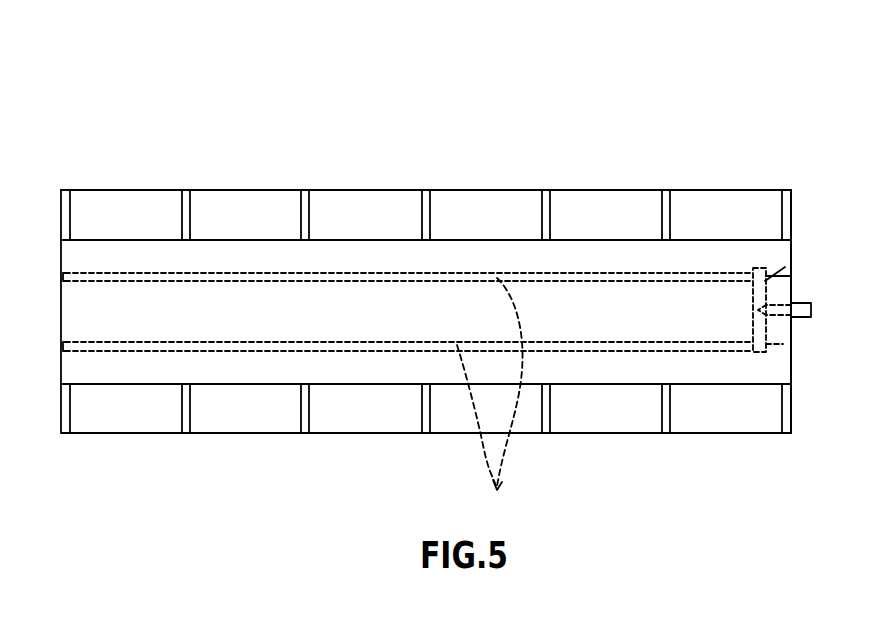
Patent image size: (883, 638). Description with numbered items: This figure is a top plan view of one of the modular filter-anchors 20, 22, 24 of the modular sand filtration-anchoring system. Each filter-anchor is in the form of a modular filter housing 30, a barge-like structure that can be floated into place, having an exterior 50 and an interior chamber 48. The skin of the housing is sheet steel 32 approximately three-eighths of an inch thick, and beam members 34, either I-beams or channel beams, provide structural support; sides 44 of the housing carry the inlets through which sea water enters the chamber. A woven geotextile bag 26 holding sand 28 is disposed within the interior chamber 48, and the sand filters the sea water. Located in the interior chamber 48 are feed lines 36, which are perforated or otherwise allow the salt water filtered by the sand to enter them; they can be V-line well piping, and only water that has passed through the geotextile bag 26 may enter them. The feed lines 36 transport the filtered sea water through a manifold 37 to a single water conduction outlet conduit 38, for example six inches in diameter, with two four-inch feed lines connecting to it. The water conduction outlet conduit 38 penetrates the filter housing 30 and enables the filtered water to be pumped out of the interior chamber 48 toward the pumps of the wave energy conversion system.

The filter-anchor 20 is at (426, 243).
The filter-anchor 22 is at (426, 243).
The filter-anchor 24 is at (363, 116).
The woven geotextile bag 26 is at (412, 356).
The sand 28 is at (480, 257).
The modular filter housing 30 is at (582, 190).
The sheet steel 32 is at (705, 190).
The beam members 34 is at (787, 417).
The feed line 36 is at (497, 490).
The manifold 37 is at (787, 265).
The water conduction outlet conduit 38 is at (797, 316).
The sides 44 is at (198, 191).
The interior chamber 48 is at (251, 263).
The exterior 50 is at (100, 191).